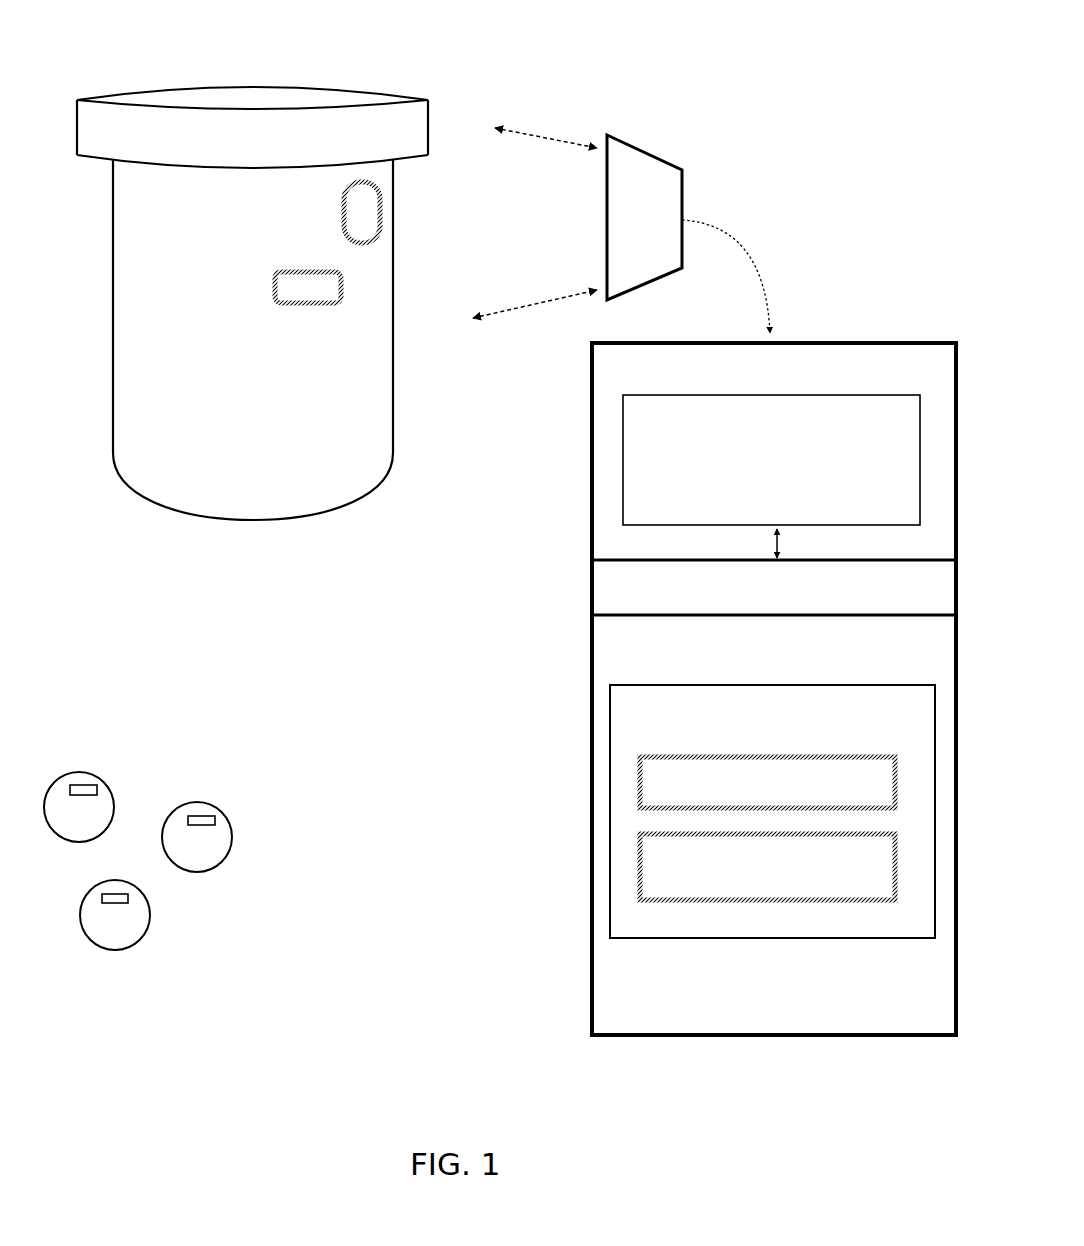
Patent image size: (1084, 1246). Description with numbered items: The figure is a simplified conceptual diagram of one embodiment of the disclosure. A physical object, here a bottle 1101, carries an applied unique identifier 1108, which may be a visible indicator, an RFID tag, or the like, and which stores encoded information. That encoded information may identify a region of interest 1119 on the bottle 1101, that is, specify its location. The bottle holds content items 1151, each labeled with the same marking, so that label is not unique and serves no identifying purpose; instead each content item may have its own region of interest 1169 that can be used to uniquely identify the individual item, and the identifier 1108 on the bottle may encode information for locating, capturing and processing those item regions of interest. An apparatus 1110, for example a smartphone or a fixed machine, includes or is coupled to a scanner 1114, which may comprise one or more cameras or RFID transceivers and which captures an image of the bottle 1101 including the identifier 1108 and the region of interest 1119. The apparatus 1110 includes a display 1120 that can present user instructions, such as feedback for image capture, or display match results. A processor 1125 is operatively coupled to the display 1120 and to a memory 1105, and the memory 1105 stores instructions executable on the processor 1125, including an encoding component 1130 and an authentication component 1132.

The bottle 1101 is at (198, 227).
The unique identifier 1108 is at (357, 178).
The region of interest 1119 is at (270, 281).
The scanner 1114 is at (645, 150).
The apparatus 1110 is at (863, 340).
The display 1120 is at (622, 455).
The processor 1125 is at (592, 580).
The memory 1105 is at (682, 685).
The encoding component 1130 is at (640, 782).
The authentication component 1132 is at (640, 865).
The content items 1151 is at (137, 798).
The region of interest 1169 is at (215, 817).